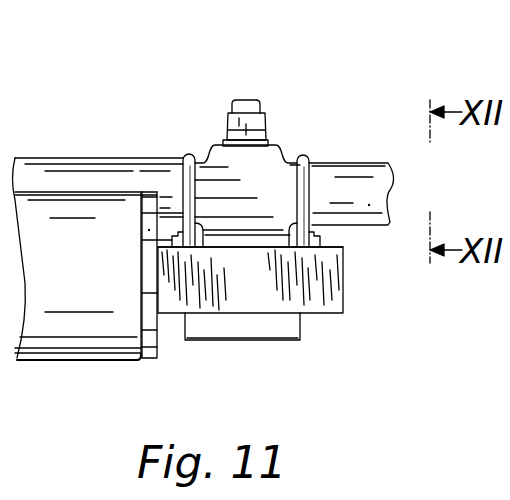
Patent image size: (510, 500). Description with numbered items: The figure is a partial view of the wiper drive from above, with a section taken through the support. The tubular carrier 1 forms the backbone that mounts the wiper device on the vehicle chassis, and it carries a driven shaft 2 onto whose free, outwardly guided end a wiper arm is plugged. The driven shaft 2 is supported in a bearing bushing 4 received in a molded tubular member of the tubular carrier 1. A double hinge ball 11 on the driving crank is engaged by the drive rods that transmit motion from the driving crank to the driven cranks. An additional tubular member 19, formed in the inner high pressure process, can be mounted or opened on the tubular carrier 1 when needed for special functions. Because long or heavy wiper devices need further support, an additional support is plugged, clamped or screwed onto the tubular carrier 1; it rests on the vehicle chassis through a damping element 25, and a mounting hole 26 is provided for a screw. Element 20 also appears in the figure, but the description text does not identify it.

The support arm 1 is at (356, 178).
The base frame 2 is at (172, 340).
The adjusting knob 4 is at (247, 100).
The guide pins 11 is at (185, 152).
The carriage body 19 is at (78, 212).
The clamping block 20 is at (332, 292).
The left retaining element 25 is at (178, 246).
The right retaining element 26 is at (318, 243).